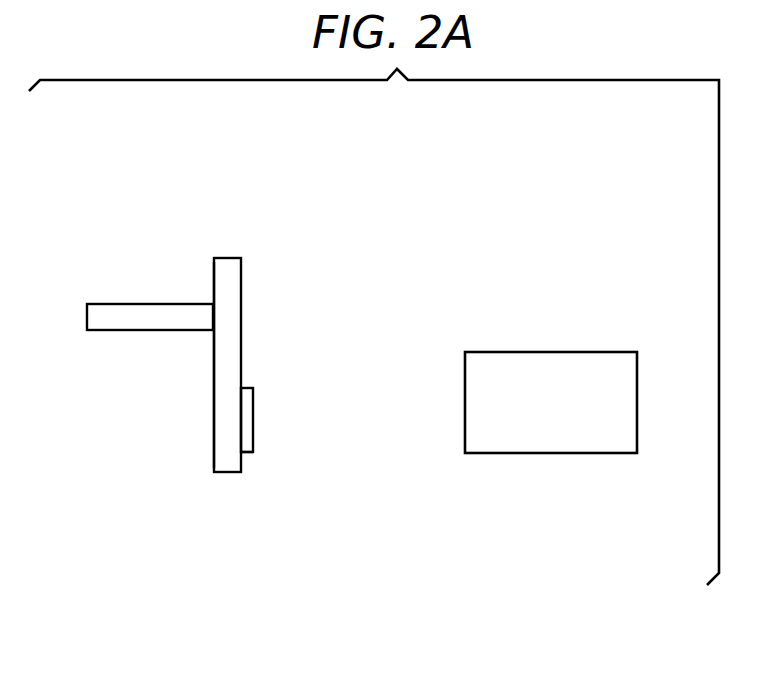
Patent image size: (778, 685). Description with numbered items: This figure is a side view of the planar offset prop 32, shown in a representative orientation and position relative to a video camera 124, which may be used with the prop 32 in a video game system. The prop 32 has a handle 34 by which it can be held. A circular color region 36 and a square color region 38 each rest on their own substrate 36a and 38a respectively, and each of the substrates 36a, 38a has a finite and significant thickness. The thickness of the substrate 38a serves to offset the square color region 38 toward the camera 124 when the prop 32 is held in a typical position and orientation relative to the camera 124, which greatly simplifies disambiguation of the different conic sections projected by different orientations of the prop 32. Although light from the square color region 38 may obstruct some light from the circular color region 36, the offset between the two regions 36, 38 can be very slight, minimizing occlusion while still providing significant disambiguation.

The prop 32 is at (145, 199).
The handle 34 is at (120, 303).
The circular color region 36 is at (242, 280).
The substrate 36a is at (214, 427).
The square color region 38 is at (254, 417).
The substrate 38a is at (243, 453).
The video camera 124 is at (595, 352).